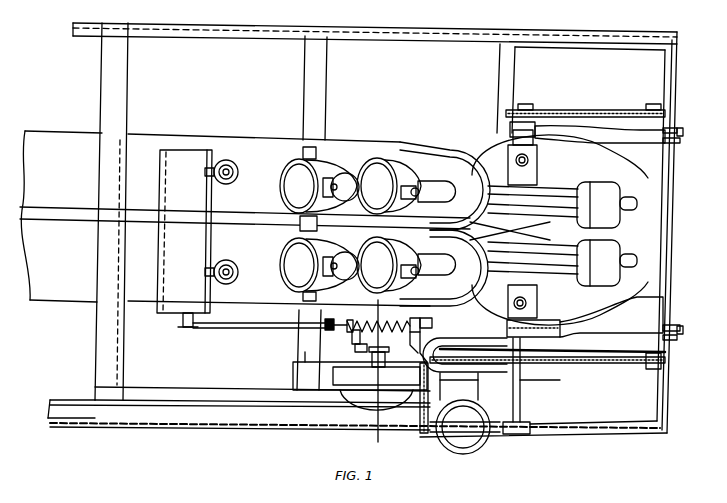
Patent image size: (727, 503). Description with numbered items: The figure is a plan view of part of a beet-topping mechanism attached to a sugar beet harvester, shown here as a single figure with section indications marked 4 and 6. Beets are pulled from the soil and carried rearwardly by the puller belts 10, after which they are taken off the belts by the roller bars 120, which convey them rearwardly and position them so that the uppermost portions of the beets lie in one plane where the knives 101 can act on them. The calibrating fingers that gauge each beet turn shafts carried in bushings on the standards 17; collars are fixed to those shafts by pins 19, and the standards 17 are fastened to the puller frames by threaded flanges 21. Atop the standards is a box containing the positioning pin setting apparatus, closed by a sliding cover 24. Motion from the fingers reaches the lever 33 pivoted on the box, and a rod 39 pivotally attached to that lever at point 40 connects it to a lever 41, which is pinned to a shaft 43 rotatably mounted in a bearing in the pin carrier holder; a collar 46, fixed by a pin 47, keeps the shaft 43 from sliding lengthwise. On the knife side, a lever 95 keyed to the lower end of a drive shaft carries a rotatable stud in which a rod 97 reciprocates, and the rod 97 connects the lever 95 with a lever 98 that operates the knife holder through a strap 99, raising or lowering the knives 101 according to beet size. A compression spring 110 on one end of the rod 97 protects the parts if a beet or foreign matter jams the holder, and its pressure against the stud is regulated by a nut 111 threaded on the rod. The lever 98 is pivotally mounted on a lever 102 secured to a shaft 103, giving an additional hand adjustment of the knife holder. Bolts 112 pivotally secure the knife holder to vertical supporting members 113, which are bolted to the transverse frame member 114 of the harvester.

The valve body section 4 is at (360, 376).
The section line 6 is at (380, 306).
The puller belts 10 is at (478, 160).
The standards 17 is at (228, 260).
The pins 19 is at (228, 160).
The flanges 21 is at (238, 170).
The sliding cover 24 is at (165, 313).
The lever 33 is at (259, 317).
The rod 39 is at (256, 328).
The point 40 is at (185, 327).
The lever 41 is at (343, 318).
The shaft 43 is at (352, 332).
The collar 46 is at (352, 340).
The pin 47 is at (355, 350).
The lever 95 is at (418, 340).
The rod 97 is at (440, 312).
The lever 98 is at (563, 334).
The strap 99 is at (590, 364).
The knives 101 is at (574, 155).
The lever 102 is at (555, 362).
The shaft 103 is at (521, 405).
The compression spring 110 is at (378, 352).
The nut 111 is at (368, 347).
The bolts 112 is at (680, 135).
The vertical supporting members 113 is at (683, 142).
The transverse frame member 114 is at (670, 232).
The roller bars 120 is at (545, 180).